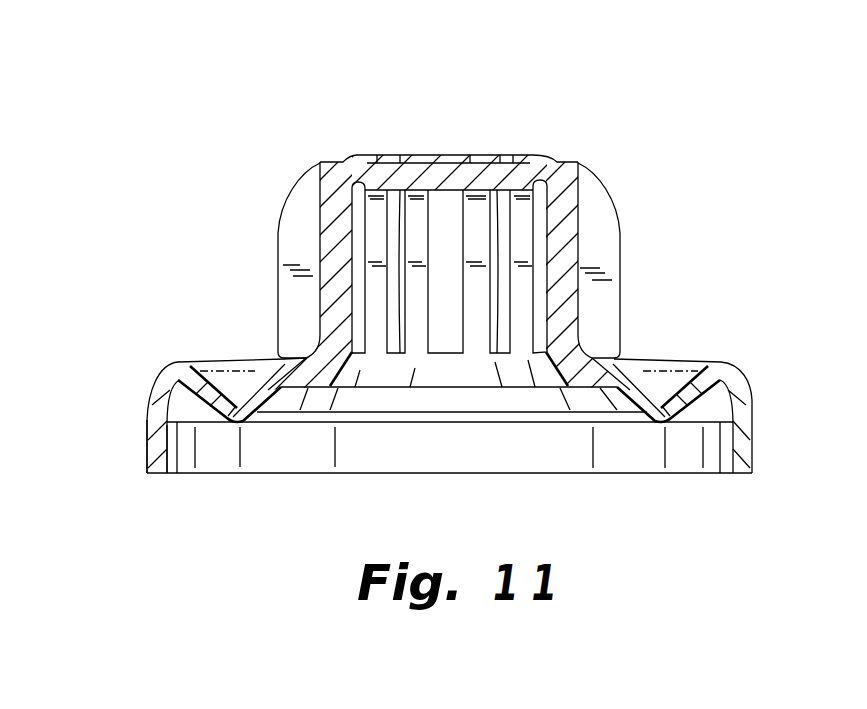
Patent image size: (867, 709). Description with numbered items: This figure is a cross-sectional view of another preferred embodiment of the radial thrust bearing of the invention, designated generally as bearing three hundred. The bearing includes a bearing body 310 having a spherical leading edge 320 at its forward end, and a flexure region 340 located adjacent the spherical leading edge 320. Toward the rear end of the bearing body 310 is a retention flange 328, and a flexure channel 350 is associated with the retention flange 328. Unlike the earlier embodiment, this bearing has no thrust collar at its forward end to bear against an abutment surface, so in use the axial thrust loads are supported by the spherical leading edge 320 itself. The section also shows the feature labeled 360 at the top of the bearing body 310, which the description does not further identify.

The bearing body 310 is at (277, 312).
The spherical leading edge 320 is at (293, 193).
The retention flange 328 is at (146, 437).
The flexure region 340 is at (553, 163).
The flexure channel 350 is at (668, 363).
The top lip 360 is at (357, 157).